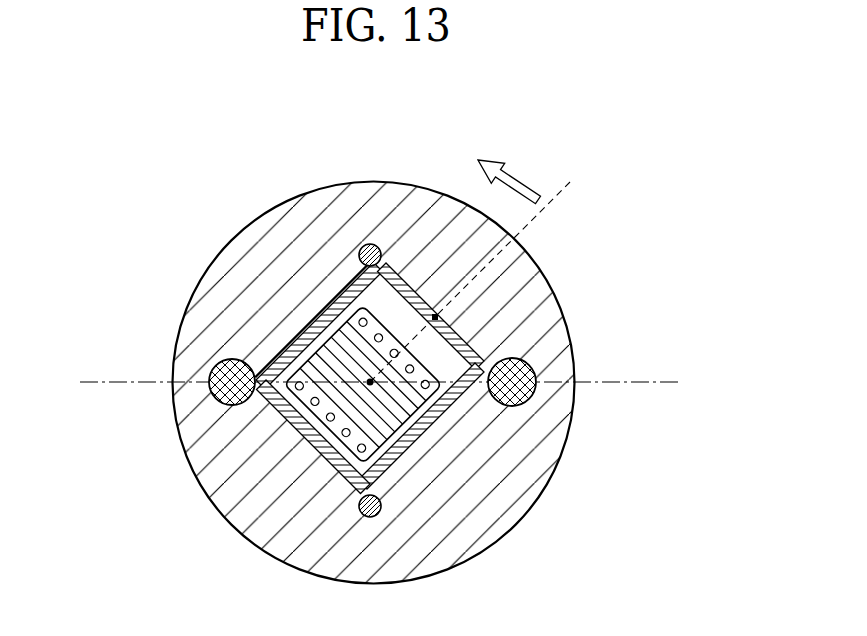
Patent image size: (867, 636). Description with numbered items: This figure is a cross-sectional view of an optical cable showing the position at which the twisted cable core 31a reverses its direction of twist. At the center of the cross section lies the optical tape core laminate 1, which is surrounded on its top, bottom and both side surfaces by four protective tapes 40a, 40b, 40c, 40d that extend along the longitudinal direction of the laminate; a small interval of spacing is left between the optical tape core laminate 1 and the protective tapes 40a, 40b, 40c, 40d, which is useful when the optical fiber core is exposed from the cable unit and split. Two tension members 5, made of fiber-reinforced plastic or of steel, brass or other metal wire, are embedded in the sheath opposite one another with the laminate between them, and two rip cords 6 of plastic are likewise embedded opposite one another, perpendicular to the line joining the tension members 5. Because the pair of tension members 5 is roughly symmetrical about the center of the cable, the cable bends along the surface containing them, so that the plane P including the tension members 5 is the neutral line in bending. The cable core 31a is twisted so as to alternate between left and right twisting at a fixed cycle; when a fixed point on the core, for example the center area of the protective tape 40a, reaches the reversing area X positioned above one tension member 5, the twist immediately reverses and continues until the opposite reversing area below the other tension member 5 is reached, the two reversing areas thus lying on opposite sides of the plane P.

The optical tape core laminate 1 is at (408, 290).
The tension member 5 is at (212, 396).
The rip cord 6 is at (370, 244).
The cable core 31a is at (338, 288).
The protective tape 40a is at (472, 355).
The protective tape 40b is at (303, 331).
The protective tape 40c is at (308, 438).
The protective tape 40d is at (407, 452).
The reversing area X is at (456, 320).
The plane P is at (365, 383).